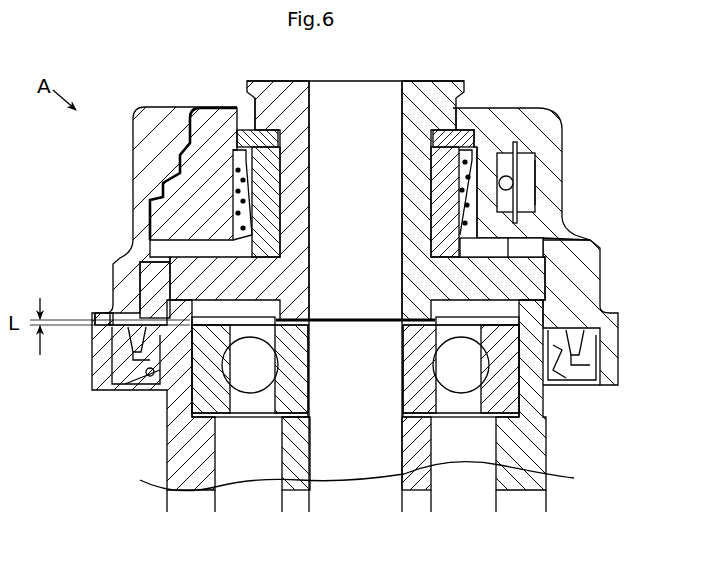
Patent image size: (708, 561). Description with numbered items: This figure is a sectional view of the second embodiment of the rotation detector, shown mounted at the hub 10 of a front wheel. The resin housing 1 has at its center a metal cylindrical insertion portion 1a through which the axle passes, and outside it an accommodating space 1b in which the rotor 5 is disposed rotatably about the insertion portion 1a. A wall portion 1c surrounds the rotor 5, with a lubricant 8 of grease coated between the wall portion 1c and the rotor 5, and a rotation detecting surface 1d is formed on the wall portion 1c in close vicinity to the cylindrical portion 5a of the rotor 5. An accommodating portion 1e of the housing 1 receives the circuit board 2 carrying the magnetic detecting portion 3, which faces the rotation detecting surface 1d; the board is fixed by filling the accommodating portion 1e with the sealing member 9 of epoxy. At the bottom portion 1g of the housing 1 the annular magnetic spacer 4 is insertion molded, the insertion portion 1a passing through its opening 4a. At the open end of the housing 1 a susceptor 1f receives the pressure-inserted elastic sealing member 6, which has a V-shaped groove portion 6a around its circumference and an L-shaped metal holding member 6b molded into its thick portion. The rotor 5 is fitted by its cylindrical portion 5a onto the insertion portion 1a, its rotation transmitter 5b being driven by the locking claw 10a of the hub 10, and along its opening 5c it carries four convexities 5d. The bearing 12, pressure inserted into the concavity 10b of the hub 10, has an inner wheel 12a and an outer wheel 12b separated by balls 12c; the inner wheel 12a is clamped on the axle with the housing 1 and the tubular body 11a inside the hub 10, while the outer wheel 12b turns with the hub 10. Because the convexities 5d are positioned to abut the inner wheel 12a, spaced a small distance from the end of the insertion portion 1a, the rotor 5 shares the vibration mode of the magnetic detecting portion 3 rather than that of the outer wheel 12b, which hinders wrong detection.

The housing 1 is at (541, 127).
The insertion portion 1a is at (297, 256).
The accommodating space 1b is at (552, 276).
The wall portion 1c is at (263, 210).
The rotation detecting surface 1d is at (478, 167).
The accommodating portion 1e is at (536, 190).
The susceptor 1f is at (107, 324).
The bottom portion 1g is at (257, 130).
The circuit board 2 is at (531, 152).
The magnetic detecting portion 3 is at (511, 180).
The spacer 4 is at (461, 137).
The opening 4a is at (277, 134).
The rotor 5 is at (193, 253).
The cylindrical portion 5a is at (233, 213).
The rotation transmitter 5b is at (153, 383).
The opening 5c is at (439, 165).
The convexities 5d is at (241, 372).
The sealing member 6 is at (591, 385).
The groove portion 6a is at (589, 343).
The holding member 6b is at (597, 363).
The lubricant 8 is at (233, 167).
The sealing member 9 is at (527, 203).
The hub 10 is at (173, 440).
The locking claw 10a is at (173, 277).
The concavity 10b is at (497, 447).
The tubular body 11a is at (287, 450).
The bearing 12 is at (391, 405).
The inner wheel 12a is at (302, 397).
The outer wheel 12b is at (511, 400).
The balls 12c is at (243, 370).